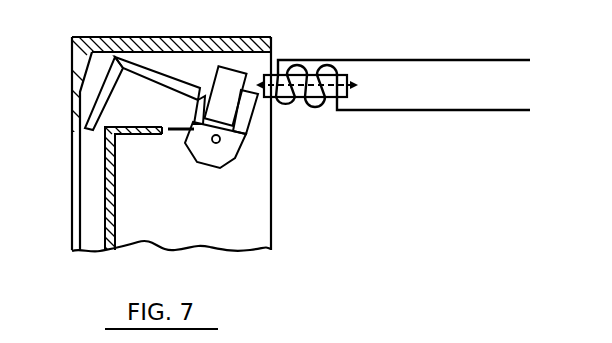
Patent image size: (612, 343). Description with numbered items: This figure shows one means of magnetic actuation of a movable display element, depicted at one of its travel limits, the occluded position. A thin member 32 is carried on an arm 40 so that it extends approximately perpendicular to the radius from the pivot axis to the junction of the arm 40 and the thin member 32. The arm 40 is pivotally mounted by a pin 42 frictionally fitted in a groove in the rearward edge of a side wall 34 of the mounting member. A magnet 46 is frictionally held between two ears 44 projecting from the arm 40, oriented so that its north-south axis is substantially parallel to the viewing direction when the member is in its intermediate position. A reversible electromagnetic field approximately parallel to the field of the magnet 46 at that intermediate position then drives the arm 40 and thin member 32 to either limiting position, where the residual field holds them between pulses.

The thin member 32 is at (104, 82).
The side wall 34 is at (125, 127).
The arm 40 is at (150, 71).
The pin 42 is at (221, 139).
The ears 44 is at (198, 98).
The magnet 46 is at (234, 80).